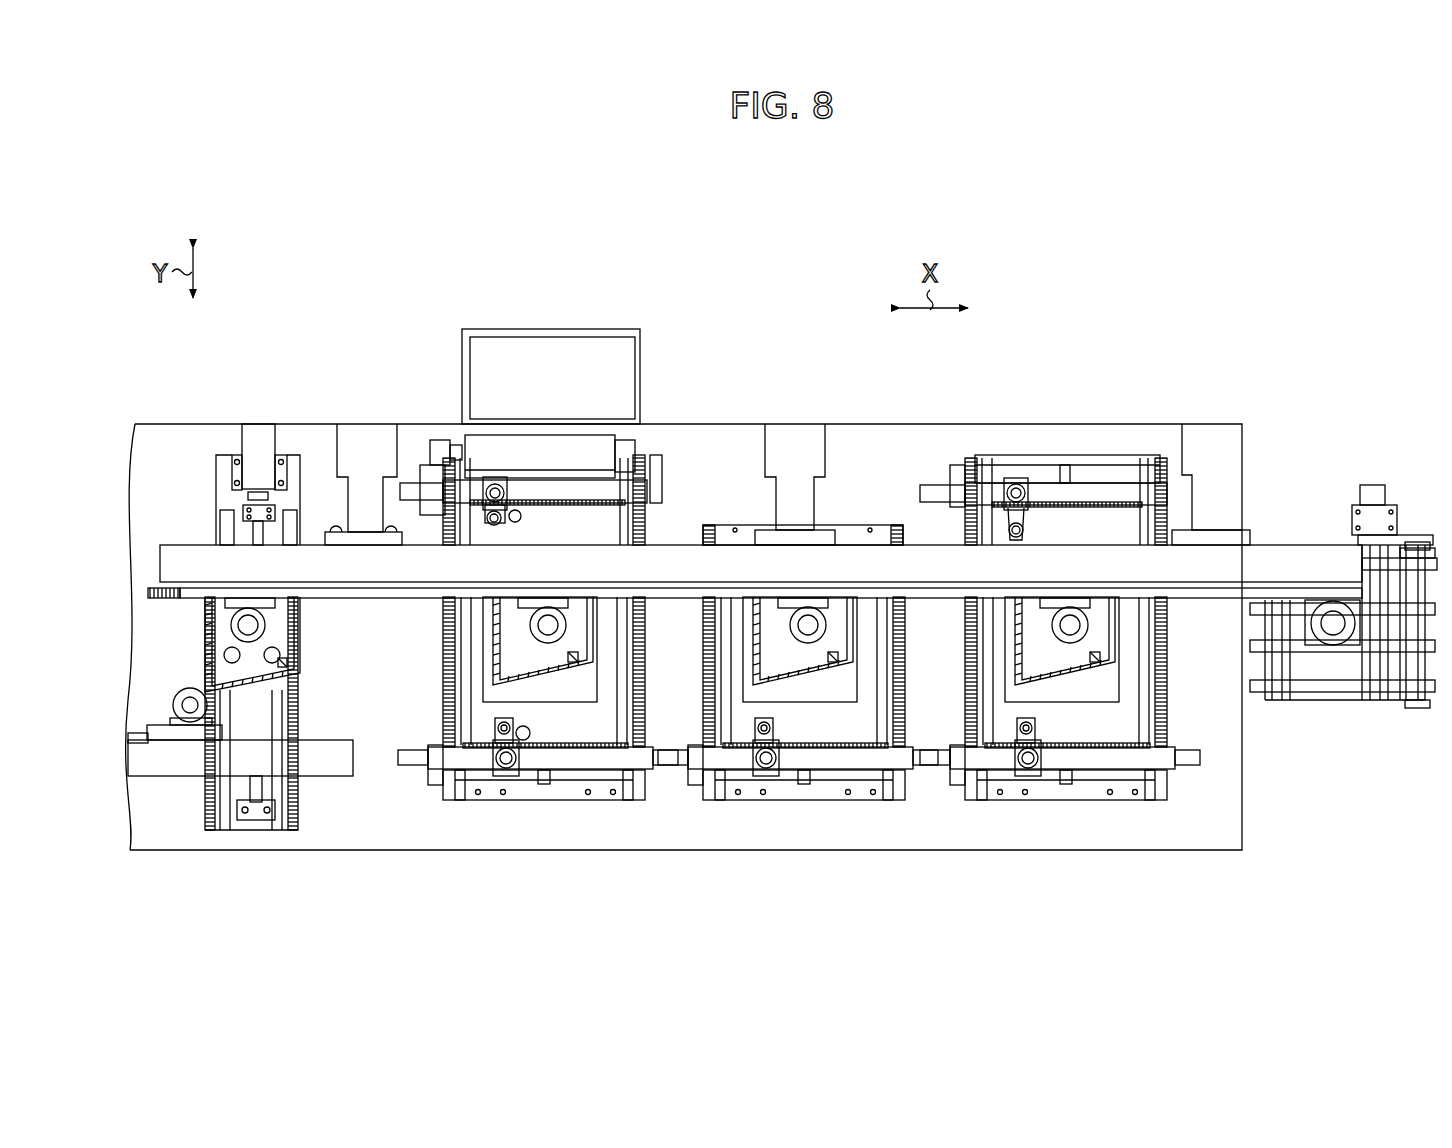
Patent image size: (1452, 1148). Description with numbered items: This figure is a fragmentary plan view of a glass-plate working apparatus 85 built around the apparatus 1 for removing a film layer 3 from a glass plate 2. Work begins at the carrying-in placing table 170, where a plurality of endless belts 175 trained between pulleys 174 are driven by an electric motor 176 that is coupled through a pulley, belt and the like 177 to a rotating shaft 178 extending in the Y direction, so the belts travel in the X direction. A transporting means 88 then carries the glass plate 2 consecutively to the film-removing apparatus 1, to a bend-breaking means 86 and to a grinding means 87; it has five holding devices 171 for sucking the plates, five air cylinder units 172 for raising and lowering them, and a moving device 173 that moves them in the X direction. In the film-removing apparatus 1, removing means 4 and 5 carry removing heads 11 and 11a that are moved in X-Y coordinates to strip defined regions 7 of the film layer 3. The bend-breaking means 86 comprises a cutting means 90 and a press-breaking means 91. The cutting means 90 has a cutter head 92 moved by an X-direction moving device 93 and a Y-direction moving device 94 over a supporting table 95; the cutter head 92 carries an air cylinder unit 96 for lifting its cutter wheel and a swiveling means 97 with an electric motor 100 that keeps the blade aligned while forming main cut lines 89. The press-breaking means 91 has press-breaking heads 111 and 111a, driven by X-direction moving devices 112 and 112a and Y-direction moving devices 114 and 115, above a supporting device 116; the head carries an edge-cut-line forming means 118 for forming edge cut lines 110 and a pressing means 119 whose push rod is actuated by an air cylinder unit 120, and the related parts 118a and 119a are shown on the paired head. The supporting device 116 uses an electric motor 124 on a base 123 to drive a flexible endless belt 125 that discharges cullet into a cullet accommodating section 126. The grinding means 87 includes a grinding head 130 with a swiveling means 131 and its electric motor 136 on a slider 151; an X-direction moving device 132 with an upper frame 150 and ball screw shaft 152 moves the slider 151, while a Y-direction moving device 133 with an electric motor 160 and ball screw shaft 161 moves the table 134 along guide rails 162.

The apparatus for removing a film layer on a glass plate 1 is at (1105, 439).
The glass plate 2 is at (1063, 692).
The film layer 3 is at (1107, 692).
The removing means 4 is at (1095, 805).
The removing means 5 is at (1043, 444).
The regions of the film layer to be removed 7 is at (1100, 670).
The removing head 11 is at (1030, 730).
The removing head 11a is at (1045, 525).
The glass-plate working apparatus 85 is at (1250, 362).
The bend-breaking means 86 is at (721, 442).
The grinding means 87 is at (263, 402).
The transporting means 88 is at (1272, 530).
The main cut lines 89 is at (833, 682).
The cutting means 90 is at (848, 444).
The press-breaking means 91 is at (432, 372).
The cutter head 92 is at (742, 720).
The X-direction moving device 93 is at (845, 753).
The Y-direction moving device 94 is at (907, 617).
The supporting table 95 is at (865, 708).
The air cylinder unit 96 is at (723, 760).
The swiveling means 97 is at (762, 728).
The electric motor 100 is at (778, 745).
The edge cut lines 110 is at (742, 722).
The press-breaking head 111 is at (483, 723).
The press-breaking head 111a is at (492, 530).
The X-direction moving device 112 is at (575, 758).
The X-direction moving device 112a is at (557, 493).
The Y-direction moving device 114 is at (660, 510).
The Y-direction moving device 115 is at (435, 632).
The supporting device 116 is at (600, 618).
The edge-cut-line forming means 118 is at (535, 770).
The nut 118a is at (525, 518).
The pressing means 119 is at (510, 728).
The coupling 119a is at (510, 528).
The air cylinder unit 120 is at (490, 728).
The base 123 is at (937, 443).
The electric motor 124 is at (425, 437).
The flexible endless belt 125 is at (495, 446).
The cullet accommodating section 126 is at (635, 344).
The grinding head 130 is at (190, 688).
The swiveling means 131 is at (178, 682).
The X-direction moving device 132 is at (170, 700).
The Y-direction moving device 133 is at (283, 415).
The table 134 is at (298, 653).
The electric motor 136 is at (180, 707).
The upper frame 150 is at (330, 768).
The slider 151 is at (205, 733).
The ball screw shaft 152 is at (135, 760).
The electric motor 160 is at (250, 440).
The ball screw shaft 161 is at (252, 534).
The guide rails 162 is at (228, 832).
The placing table 170 is at (1325, 700).
The holding devices 171 is at (530, 630).
The air cylinder units 172 is at (548, 625).
The moving device 173 is at (1302, 535).
The pulleys 174 is at (1443, 638).
The endless belts 175 is at (1440, 600).
The electric motor 176 is at (1372, 498).
The pulley, belt and the like 177 is at (1380, 489).
The rotating shaft 178 is at (1405, 632).